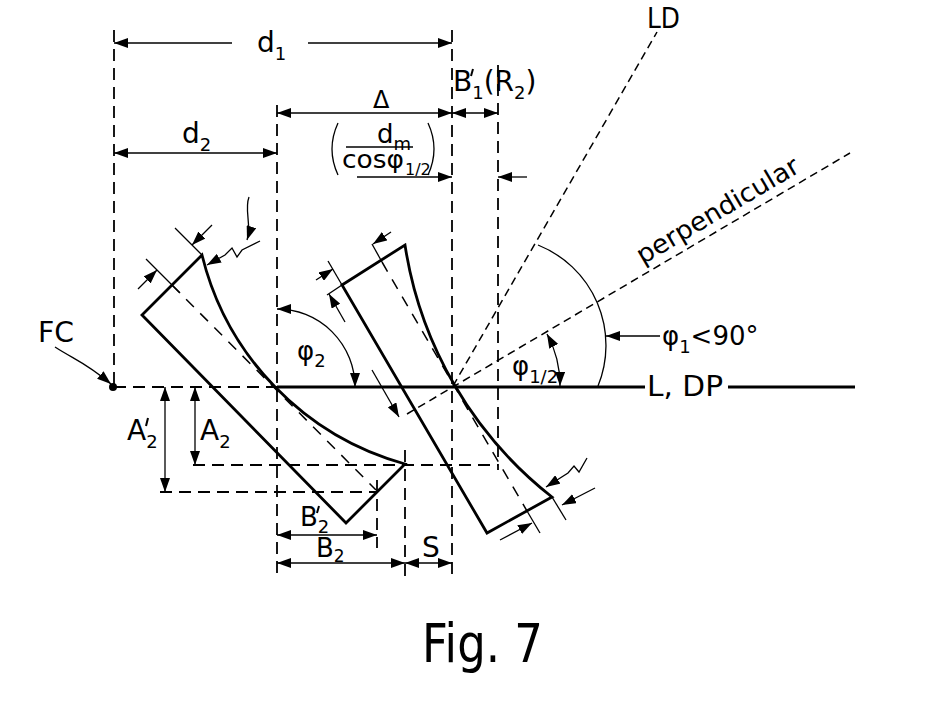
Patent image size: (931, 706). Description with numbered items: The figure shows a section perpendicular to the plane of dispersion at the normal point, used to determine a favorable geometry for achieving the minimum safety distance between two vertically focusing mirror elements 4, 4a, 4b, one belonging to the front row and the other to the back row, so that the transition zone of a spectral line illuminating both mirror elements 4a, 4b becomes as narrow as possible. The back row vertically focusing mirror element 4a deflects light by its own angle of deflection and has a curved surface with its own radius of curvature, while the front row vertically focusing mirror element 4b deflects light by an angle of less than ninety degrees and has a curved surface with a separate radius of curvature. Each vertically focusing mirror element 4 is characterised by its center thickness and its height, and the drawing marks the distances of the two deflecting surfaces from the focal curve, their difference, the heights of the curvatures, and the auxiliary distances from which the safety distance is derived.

The vertically focusing mirror element 4 is at (424, 374).
The back row vertically focusing mirror element 4a is at (258, 438).
The front row vertically focusing mirror element 4b is at (581, 538).